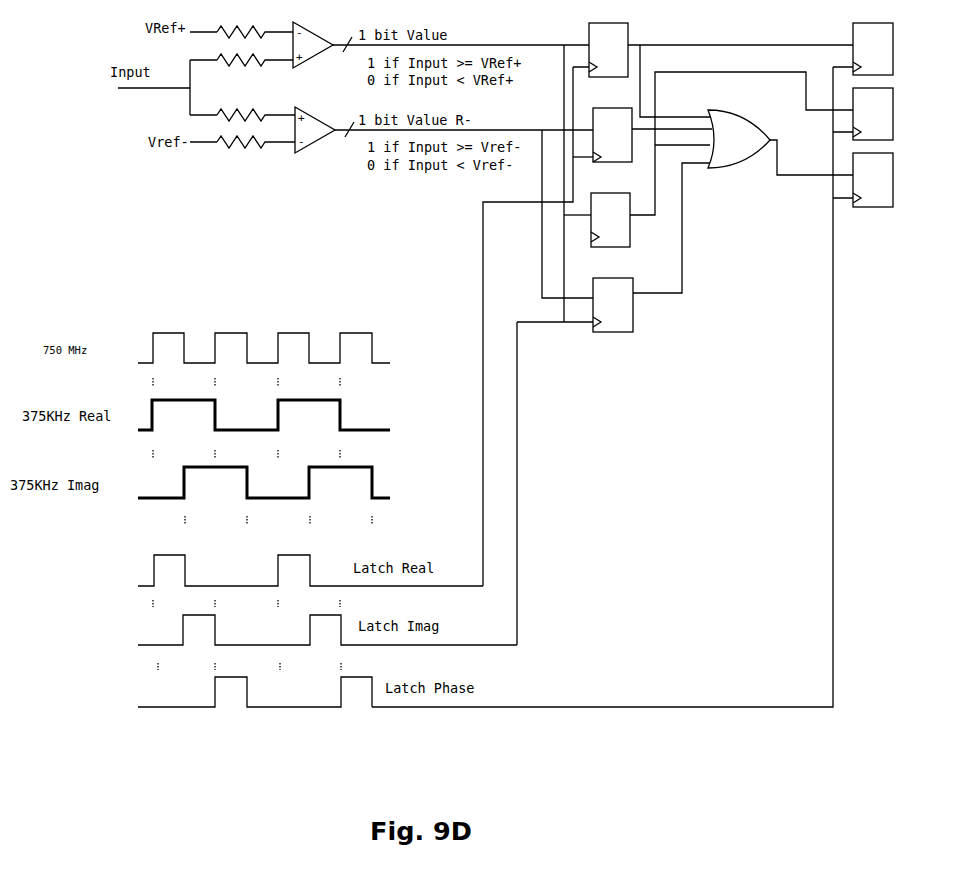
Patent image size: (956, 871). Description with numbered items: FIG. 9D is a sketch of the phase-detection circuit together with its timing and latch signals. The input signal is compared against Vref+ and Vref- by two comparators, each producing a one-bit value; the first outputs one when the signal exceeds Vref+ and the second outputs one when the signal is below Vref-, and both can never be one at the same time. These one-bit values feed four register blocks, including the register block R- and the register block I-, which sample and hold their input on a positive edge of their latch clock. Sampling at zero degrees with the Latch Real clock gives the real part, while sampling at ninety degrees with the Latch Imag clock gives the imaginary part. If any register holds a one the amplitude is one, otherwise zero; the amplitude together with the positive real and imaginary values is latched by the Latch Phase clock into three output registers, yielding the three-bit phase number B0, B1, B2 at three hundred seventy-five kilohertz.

The phase output bit B0 is at (893, 45).
The phase output bit B1 is at (893, 110).
The phase output bit B2 is at (893, 175).
The register block R- is at (612, 135).
The register block I- is at (613, 305).